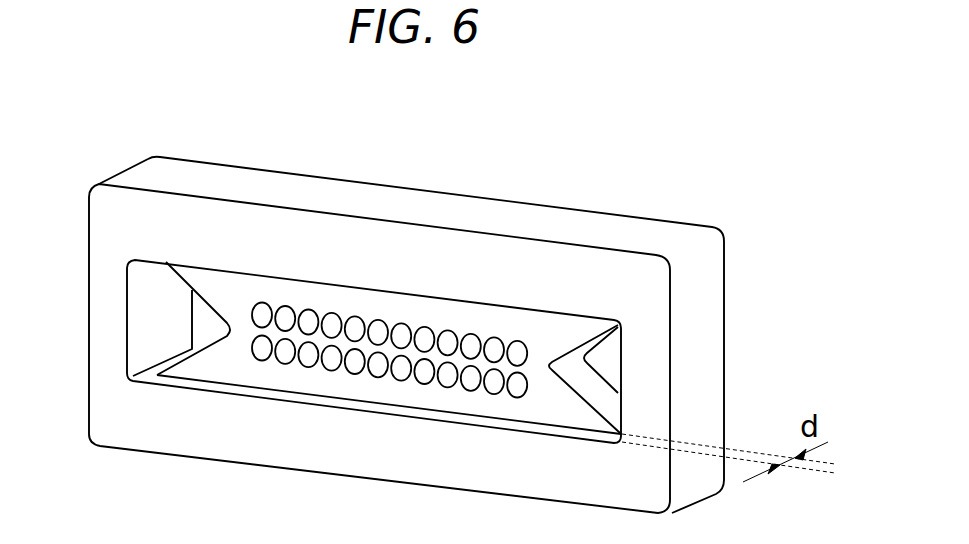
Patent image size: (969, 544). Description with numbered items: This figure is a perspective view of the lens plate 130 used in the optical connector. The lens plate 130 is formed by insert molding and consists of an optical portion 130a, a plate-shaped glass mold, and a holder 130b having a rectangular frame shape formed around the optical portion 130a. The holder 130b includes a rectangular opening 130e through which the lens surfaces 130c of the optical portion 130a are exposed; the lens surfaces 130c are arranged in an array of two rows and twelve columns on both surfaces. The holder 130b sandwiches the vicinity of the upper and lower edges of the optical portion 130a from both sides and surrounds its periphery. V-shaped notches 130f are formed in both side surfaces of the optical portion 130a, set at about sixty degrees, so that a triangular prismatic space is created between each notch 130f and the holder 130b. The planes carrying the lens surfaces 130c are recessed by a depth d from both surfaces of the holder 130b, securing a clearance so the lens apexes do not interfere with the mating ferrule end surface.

The lens plate 130 is at (132, 161).
The optical portion 130a is at (447, 313).
The holder 130b is at (650, 235).
The lens surfaces 130c is at (512, 350).
The rectangular opening 130e is at (140, 303).
The V-shaped notch 130f is at (170, 368).